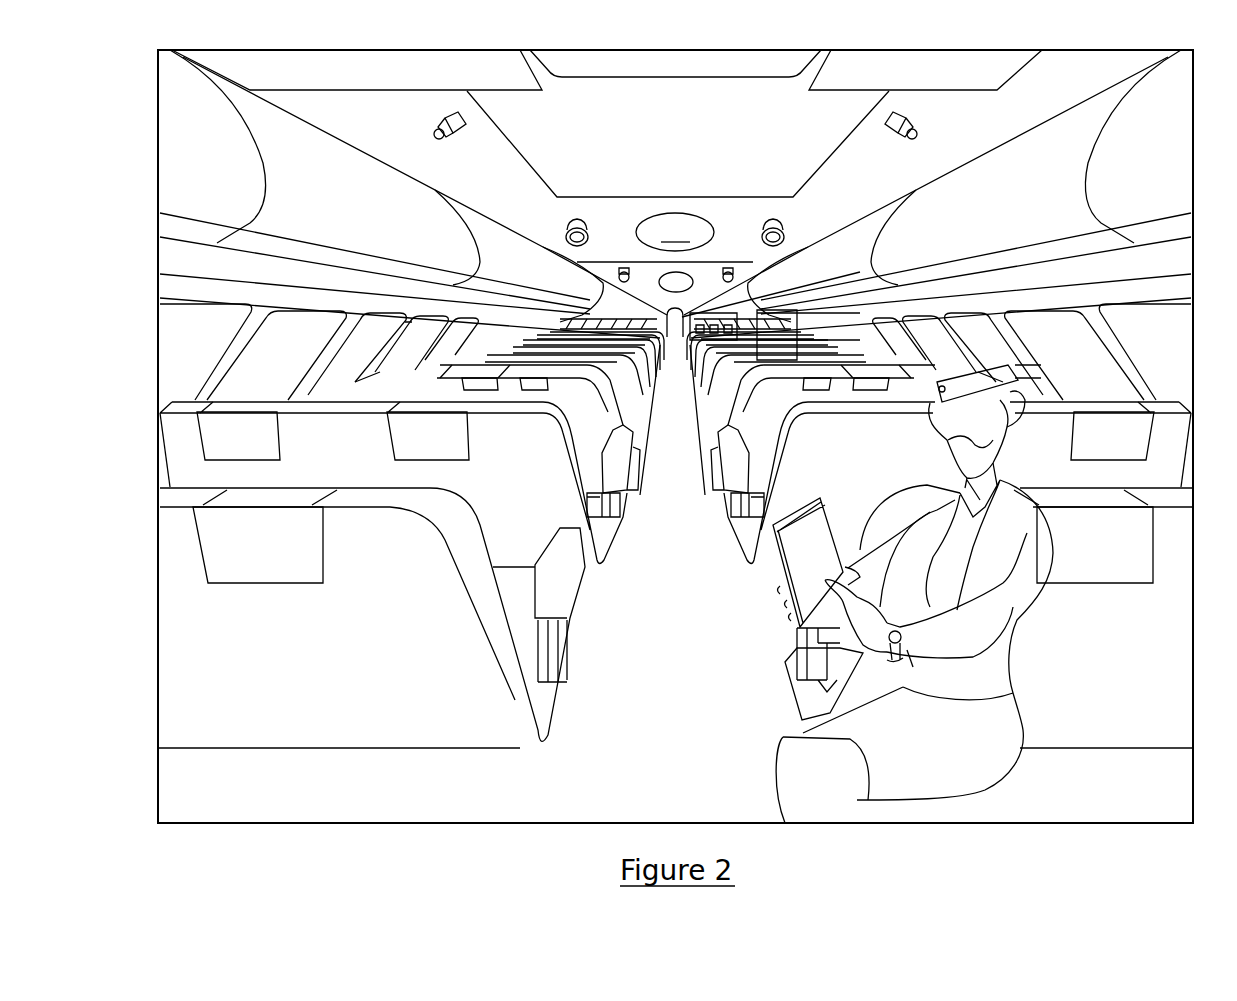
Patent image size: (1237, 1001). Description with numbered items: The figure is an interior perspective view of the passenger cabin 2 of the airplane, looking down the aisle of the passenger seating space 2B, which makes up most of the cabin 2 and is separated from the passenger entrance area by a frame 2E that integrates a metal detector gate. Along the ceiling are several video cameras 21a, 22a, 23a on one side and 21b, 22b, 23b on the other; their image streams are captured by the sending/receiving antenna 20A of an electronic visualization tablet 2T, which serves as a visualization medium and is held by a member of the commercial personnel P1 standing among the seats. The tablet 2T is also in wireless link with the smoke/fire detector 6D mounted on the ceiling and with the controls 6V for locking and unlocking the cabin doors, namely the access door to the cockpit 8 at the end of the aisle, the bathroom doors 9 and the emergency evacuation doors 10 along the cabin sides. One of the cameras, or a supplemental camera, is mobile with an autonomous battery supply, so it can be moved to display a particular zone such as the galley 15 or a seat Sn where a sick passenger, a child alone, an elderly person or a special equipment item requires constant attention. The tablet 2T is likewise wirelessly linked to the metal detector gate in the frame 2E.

The passenger cabin 2 is at (934, 63).
The passenger seating space 2B is at (672, 763).
The frame 2E is at (720, 310).
The electronic visualization tablet 2T is at (774, 560).
The smoke/fire detector 6D is at (675, 232).
The control for locking/unlocking the cabin doors 6V is at (392, 350).
The access door to the cockpit 8 is at (683, 347).
The bathroom door 9 is at (793, 270).
The emergency evacuation door 10 is at (422, 338).
The galley 15 is at (779, 286).
The sending/receiving antenna 20A is at (812, 497).
The video camera 21a is at (622, 270).
The video camera 21b is at (730, 270).
The video camera 22a is at (572, 222).
The video camera 22b is at (776, 222).
The video camera 23a is at (466, 128).
The video camera 23b is at (937, 127).
The member of the commercial personnel P1 is at (1050, 563).
The seat Sn is at (483, 607).